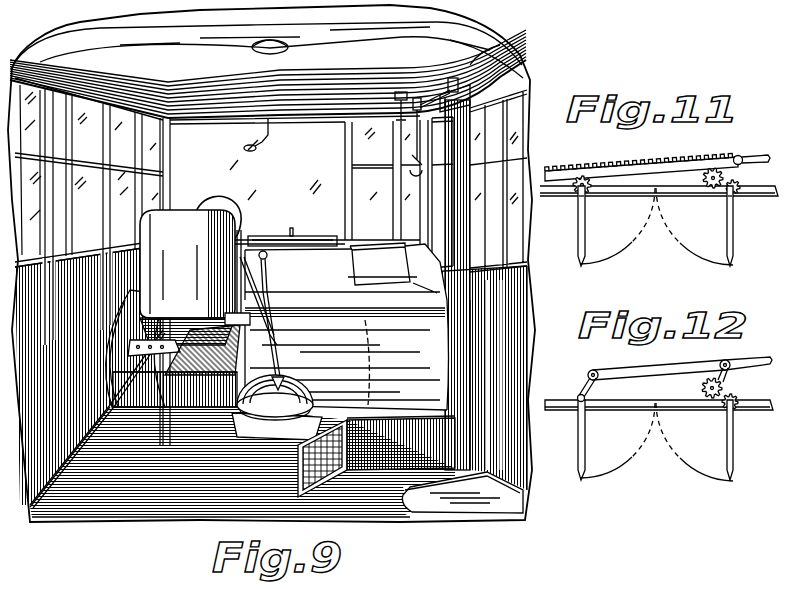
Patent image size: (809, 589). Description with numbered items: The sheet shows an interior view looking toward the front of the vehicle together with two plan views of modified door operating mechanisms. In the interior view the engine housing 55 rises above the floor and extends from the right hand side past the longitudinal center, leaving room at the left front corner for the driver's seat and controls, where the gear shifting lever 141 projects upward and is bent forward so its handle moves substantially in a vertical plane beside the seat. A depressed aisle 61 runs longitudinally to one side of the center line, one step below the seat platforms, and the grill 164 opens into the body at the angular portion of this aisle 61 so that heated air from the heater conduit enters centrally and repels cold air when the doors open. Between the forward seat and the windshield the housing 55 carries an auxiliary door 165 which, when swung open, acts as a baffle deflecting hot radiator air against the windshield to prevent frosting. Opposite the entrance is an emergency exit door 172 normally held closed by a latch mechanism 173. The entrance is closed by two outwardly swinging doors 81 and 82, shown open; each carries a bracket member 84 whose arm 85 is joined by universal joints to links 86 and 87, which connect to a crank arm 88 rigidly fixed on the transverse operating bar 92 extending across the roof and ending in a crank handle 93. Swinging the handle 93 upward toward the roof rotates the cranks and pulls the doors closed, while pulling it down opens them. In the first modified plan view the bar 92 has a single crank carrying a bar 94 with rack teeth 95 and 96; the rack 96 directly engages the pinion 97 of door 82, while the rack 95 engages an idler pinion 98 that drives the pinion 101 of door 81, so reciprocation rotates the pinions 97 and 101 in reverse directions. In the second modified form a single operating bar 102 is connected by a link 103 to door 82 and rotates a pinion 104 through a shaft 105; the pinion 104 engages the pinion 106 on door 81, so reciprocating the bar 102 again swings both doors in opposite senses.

In FIG. 9, the housing 55 is at (355, 255).
In FIG. 9, the depressed aisle 61 is at (370, 490).
In FIG. 9, the door 81 is at (473, 296).
In FIG. 11, the door 81 is at (727, 231).
In FIG. 12, the door 81 is at (727, 444).
In FIG. 11, the door 82 is at (586, 226).
In FIG. 12, the door 82 is at (584, 443).
In FIG. 9, the bracket member 84 is at (470, 104).
In FIG. 9, the arm 85 is at (490, 88).
In FIG. 9, the link 86 is at (500, 45).
In FIG. 9, the link 87 is at (415, 163).
In FIG. 9, the crank arm 88 is at (413, 113).
In FIG. 9, the transverse operating bar 92 is at (325, 107).
In FIG. 9, the crank handle 93 is at (283, 152).
In FIG. 11, the bar 94 is at (757, 158).
In FIG. 11, the rack teeth 95 is at (693, 167).
In FIG. 11, the rack teeth 96 is at (565, 172).
In FIG. 11, the pinion 97 is at (588, 190).
In FIG. 11, the idler pinion 98 is at (711, 187).
In FIG. 11, the pinion 101 is at (741, 180).
In FIG. 12, the operating bar 102 is at (740, 354).
In FIG. 12, the link 103 is at (590, 372).
In FIG. 12, the pinion 104 is at (700, 388).
In FIG. 12, the shaft 105 is at (727, 378).
In FIG. 12, the pinion 106 is at (728, 404).
In FIG. 9, the gear shifting lever 141 is at (262, 292).
In FIG. 9, the grill 164 is at (338, 437).
In FIG. 9, the auxiliary door 165 is at (260, 242).
In FIG. 9, the emergency exit door 172 is at (108, 173).
In FIG. 9, the latch mechanism 173 is at (77, 272).